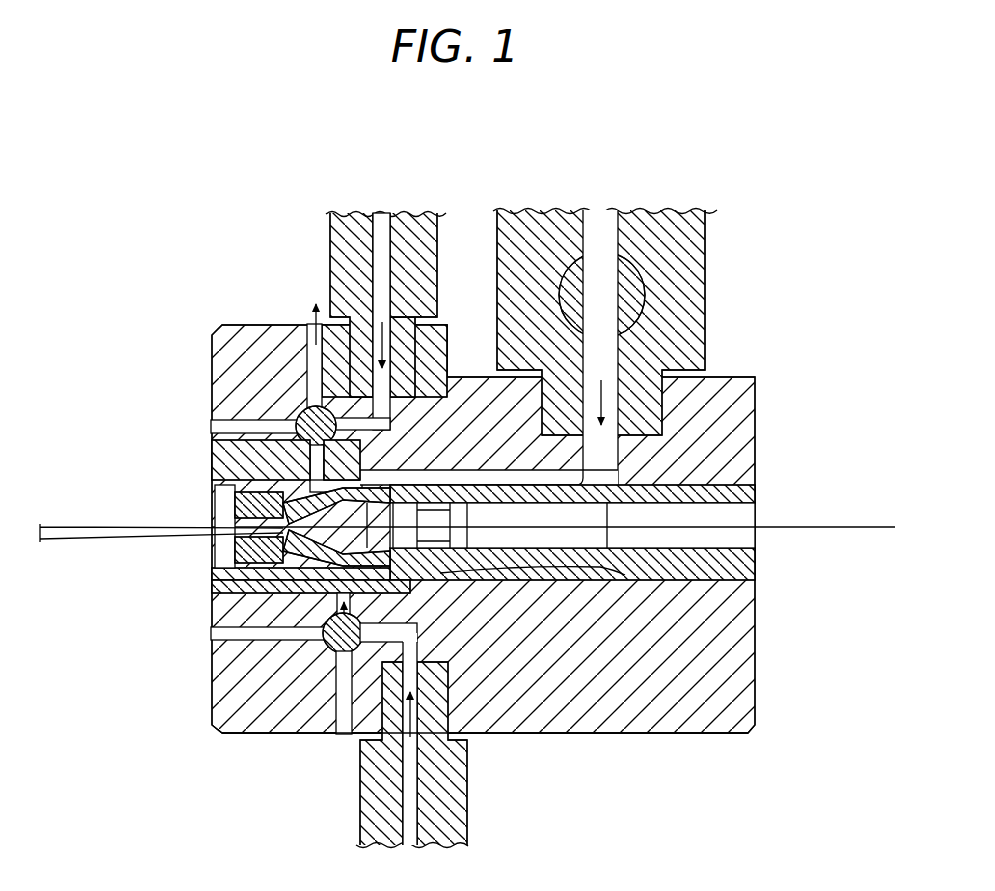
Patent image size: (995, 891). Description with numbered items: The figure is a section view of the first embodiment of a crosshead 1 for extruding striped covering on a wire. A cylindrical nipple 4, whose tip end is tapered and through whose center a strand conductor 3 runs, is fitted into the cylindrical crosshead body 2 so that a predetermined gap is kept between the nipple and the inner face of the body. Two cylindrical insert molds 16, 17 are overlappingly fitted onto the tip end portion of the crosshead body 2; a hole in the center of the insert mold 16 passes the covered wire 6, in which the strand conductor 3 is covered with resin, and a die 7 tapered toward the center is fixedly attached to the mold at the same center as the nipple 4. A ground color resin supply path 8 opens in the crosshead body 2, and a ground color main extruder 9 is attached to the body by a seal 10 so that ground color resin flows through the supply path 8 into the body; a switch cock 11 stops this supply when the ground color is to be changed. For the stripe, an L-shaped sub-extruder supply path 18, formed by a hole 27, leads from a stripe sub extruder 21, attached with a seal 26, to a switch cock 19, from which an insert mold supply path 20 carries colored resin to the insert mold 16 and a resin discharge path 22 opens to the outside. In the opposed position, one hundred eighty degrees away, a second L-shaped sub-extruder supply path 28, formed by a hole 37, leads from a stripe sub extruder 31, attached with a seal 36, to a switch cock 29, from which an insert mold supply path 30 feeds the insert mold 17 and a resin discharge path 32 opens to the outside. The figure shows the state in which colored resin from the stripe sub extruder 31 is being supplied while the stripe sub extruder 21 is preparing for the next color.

The crosshead 1 is at (512, 405).
The crosshead body 2 is at (755, 398).
The strand conductor 3 is at (843, 526).
The nipple 4 is at (757, 565).
The covered wire 6 is at (80, 526).
The die 7 is at (258, 512).
The ground color resin supply path 8 is at (615, 458).
The ground color main extruder 9 is at (703, 248).
The seal 10 is at (665, 432).
The switch cock 11 is at (641, 265).
The insert mold 16 is at (220, 582).
The insert mold 17 is at (215, 610).
The sub-extruder supply path 18 is at (388, 420).
The switch cock 19 is at (300, 412).
The insert mold supply path 20 is at (300, 450).
The stripe sub extruder 21 is at (332, 240).
The resin discharge path 22 is at (310, 357).
The seal 26 is at (425, 380).
The hole 27 is at (213, 427).
The sub-extruder supply path 28 is at (420, 633).
The switch cock 29 is at (326, 655).
The insert mold supply path 30 is at (248, 727).
The stripe sub extruder 31 is at (470, 825).
The resin discharge path 32 is at (322, 738).
The seal 36 is at (402, 660).
The hole 37 is at (218, 640).